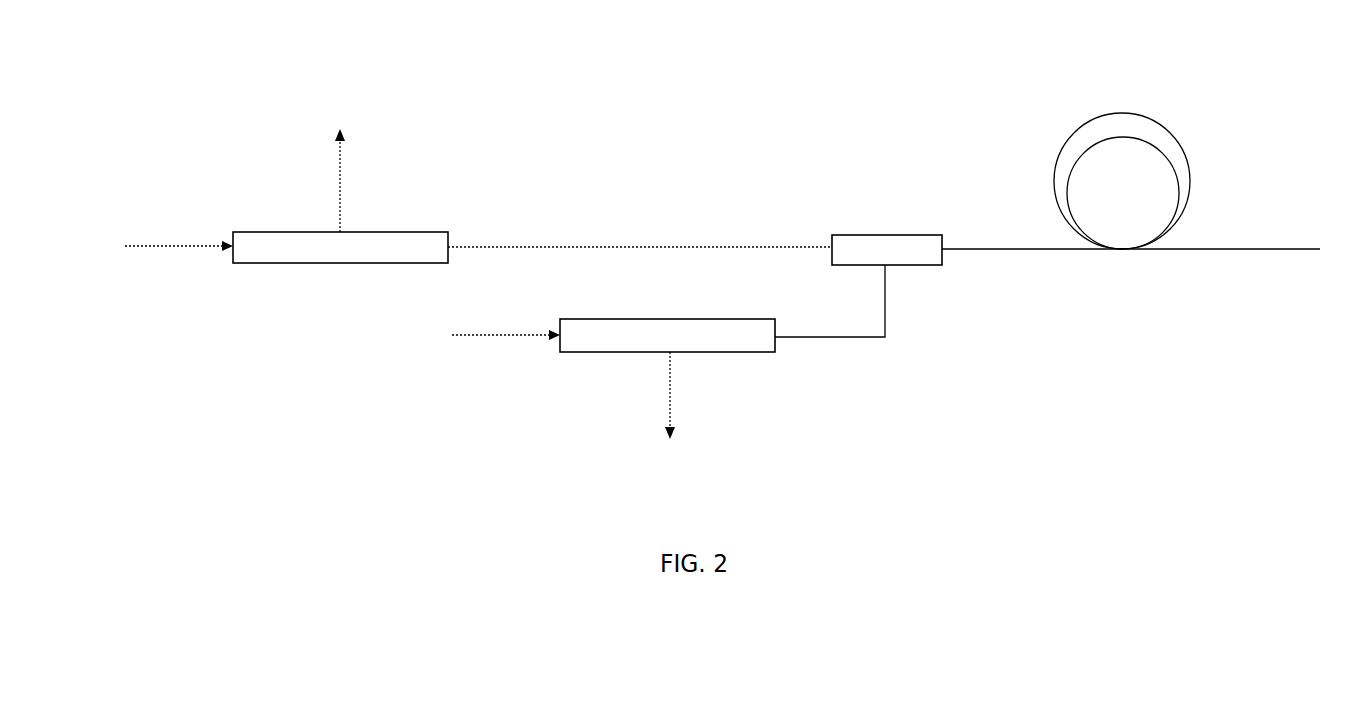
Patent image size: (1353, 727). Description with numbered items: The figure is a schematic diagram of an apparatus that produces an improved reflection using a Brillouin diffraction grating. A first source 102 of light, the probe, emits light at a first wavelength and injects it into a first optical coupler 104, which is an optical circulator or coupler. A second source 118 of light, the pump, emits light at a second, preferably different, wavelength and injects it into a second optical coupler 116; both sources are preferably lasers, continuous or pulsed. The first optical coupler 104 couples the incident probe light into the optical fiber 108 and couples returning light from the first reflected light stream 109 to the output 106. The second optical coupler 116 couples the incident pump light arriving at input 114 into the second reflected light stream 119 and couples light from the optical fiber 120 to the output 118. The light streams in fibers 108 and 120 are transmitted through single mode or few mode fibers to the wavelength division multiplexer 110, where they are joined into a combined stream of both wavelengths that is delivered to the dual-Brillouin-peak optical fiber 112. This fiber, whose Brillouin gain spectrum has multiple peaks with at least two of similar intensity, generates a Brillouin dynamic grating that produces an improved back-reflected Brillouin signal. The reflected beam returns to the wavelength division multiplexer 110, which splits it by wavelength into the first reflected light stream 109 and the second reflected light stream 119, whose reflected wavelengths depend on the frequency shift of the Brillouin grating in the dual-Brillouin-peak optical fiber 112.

The first source of light 102 is at (176, 258).
The first optical coupler 104 is at (395, 228).
The first reflected light output 106 is at (343, 152).
The optical fiber carrying first light stream 108 is at (542, 247).
The first reflected light stream 109 is at (592, 248).
The wavelength division multiplexer 110 is at (895, 233).
The dual-Brillouin-peak optical fiber 112 is at (1192, 180).
The pump incident light input 114 is at (517, 336).
The second optical coupler 116 is at (777, 352).
The second source of light / second output 118 is at (668, 383).
The second reflected light stream 119 is at (882, 277).
The optical fiber carrying second light stream 120 is at (895, 328).